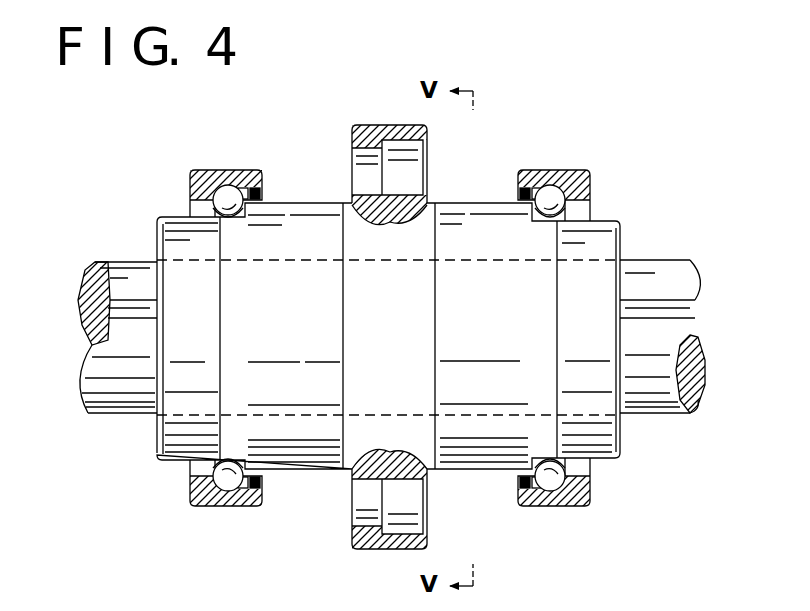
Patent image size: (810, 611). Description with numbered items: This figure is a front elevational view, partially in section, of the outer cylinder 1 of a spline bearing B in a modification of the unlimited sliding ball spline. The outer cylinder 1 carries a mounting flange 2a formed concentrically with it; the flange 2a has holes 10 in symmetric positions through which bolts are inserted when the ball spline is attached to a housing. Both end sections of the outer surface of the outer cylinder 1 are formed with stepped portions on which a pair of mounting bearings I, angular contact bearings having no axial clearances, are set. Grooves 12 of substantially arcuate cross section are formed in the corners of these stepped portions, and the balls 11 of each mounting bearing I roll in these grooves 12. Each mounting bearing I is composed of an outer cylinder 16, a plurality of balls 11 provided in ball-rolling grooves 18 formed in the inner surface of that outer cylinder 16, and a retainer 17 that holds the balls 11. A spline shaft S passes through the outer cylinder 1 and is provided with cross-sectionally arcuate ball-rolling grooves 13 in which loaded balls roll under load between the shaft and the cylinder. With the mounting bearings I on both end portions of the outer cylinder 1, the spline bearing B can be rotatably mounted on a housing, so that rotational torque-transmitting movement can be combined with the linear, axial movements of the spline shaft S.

The outer cylinder 1 is at (389, 322).
The mounting flange 2a is at (385, 319).
The holes 10 is at (418, 168).
The balls 11 is at (228, 186).
The grooves 12 is at (228, 422).
The ball-rolling grooves 13 is at (82, 312).
The outer cylinder 16 is at (190, 184).
The retainer 17 is at (258, 190).
The ball-rolling grooves 18 is at (204, 173).
The spline bearing B is at (389, 319).
The mounting bearings I is at (383, 331).
The spline shaft S is at (381, 297).